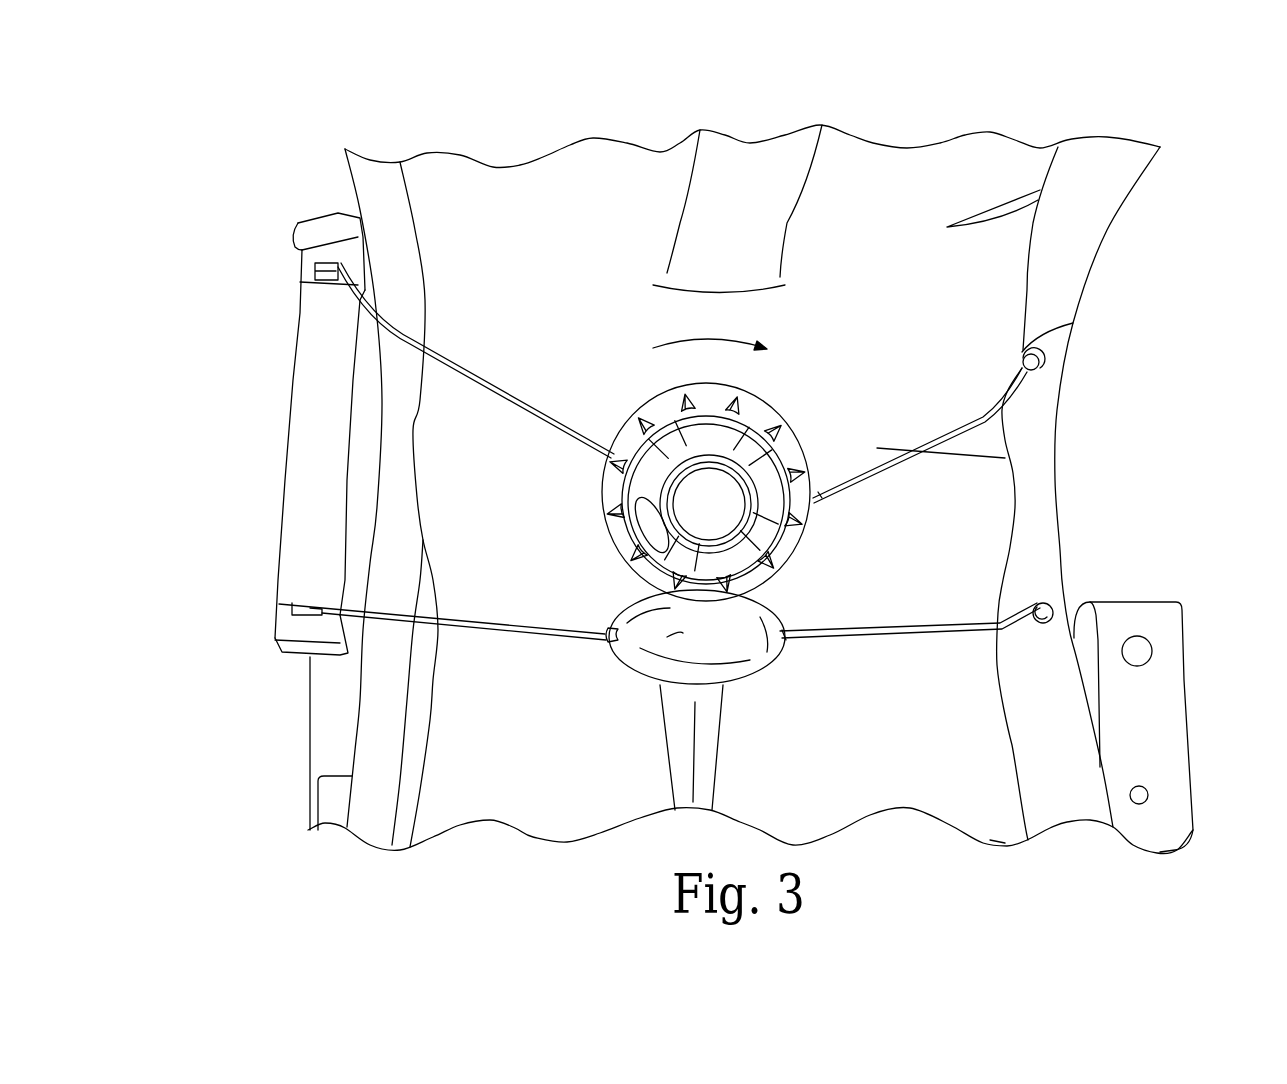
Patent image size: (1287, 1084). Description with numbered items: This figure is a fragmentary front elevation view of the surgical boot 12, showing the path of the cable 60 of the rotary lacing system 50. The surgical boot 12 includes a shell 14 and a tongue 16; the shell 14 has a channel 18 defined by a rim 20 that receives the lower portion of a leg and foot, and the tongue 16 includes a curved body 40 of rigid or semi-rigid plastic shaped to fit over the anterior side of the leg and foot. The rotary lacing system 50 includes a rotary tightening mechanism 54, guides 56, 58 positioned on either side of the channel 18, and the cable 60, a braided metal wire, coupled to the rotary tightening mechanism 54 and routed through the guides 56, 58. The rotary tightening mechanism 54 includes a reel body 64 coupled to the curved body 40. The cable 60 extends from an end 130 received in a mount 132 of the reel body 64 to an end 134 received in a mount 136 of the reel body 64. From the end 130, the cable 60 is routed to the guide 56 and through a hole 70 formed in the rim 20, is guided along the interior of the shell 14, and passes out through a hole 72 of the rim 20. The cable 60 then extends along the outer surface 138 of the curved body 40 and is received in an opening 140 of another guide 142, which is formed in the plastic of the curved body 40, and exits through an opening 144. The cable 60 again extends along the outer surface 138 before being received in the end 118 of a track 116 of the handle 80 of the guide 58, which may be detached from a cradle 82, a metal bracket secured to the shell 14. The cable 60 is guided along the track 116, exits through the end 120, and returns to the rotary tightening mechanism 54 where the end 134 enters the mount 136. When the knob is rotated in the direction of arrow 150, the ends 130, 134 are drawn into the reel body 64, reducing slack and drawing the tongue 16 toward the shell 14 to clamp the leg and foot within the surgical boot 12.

The surgical boot 12 is at (1200, 195).
The shell 14 is at (1108, 218).
The tongue 16 is at (883, 795).
The channel 18 is at (1048, 138).
The rim 20 is at (1065, 810).
The curved body 40 is at (917, 178).
The rotary lacing system 50 is at (715, 474).
The rotary tightening mechanism 54 is at (717, 403).
The guide 56 is at (1077, 469).
The guide 58 is at (261, 511).
The cable 60 is at (872, 476).
The reel body 64 is at (757, 405).
The hole 70 is at (1040, 355).
The hole 72 is at (1050, 606).
The handle 80 is at (302, 228).
The cradle 82 is at (305, 360).
The track 116 is at (290, 606).
The end 118 is at (303, 615).
The end 120 is at (313, 272).
The end 130 is at (815, 506).
The mount 132 is at (820, 496).
The end 134 is at (610, 450).
The mount 136 is at (613, 450).
The outer surface 138 is at (997, 830).
The opening 140 is at (790, 640).
The guide 142 is at (702, 700).
The opening 144 is at (608, 642).
The arrow 150 is at (713, 333).